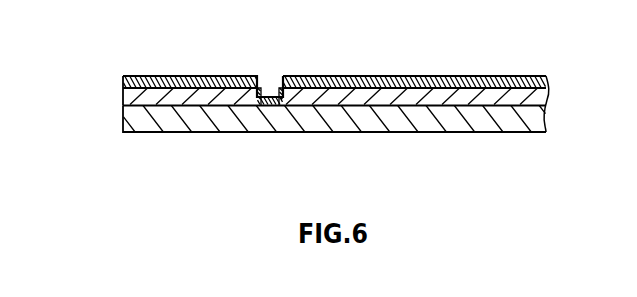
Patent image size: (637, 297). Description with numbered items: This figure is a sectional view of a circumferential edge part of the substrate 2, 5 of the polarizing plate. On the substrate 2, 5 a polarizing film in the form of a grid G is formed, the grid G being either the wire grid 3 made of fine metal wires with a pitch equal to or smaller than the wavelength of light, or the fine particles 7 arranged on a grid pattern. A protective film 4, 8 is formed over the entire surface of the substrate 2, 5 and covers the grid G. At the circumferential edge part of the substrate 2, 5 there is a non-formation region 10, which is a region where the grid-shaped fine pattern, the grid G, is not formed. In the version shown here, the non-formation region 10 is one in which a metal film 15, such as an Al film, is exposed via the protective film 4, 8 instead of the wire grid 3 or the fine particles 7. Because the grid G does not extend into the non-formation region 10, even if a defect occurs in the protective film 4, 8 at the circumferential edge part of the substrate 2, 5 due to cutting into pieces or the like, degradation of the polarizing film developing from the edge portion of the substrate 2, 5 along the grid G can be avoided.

The non-formation region 10 is at (190, 76).
The substrate 2 is at (336, 132).
The substrate 5 is at (322, 121).
The wire grid 3 is at (300, 67).
The fine particles 7 is at (342, 94).
The protective film 4 is at (334, 53).
The protective film 8 is at (427, 84).
The metal film 15 is at (137, 93).
The grid G is at (506, 76).